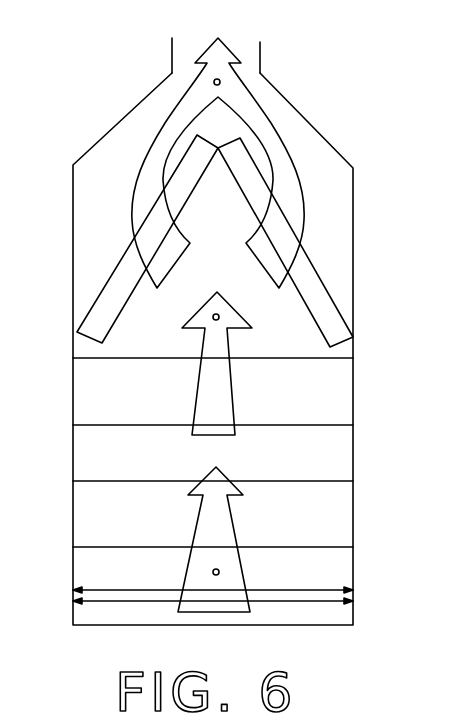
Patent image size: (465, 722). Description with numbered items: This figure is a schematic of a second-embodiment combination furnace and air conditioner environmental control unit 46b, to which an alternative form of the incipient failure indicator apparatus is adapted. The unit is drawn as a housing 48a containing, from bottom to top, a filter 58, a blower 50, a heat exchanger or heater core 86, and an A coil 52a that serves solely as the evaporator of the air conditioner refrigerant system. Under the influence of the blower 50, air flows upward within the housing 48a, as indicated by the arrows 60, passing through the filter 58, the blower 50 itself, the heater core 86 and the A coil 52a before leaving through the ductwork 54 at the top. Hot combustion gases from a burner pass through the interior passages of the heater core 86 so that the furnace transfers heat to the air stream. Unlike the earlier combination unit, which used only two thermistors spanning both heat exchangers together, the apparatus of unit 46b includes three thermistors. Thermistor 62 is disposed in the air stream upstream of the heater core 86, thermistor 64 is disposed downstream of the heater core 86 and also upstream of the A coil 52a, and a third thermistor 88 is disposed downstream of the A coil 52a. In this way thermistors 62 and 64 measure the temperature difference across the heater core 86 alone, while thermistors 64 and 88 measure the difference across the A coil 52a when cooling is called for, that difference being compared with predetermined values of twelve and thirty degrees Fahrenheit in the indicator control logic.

The environmental control unit 46b is at (74, 133).
The ductwork 54 is at (172, 53).
The housing 48a is at (73, 356).
The A coil 52a is at (332, 320).
The heat exchanger 86 is at (340, 400).
The blower 50 is at (347, 515).
The filter 58 is at (353, 598).
The arrows 60 is at (293, 150).
The third thermistor 88 is at (220, 82).
The thermistor 64 is at (219, 316).
The thermistor 62 is at (219, 572).